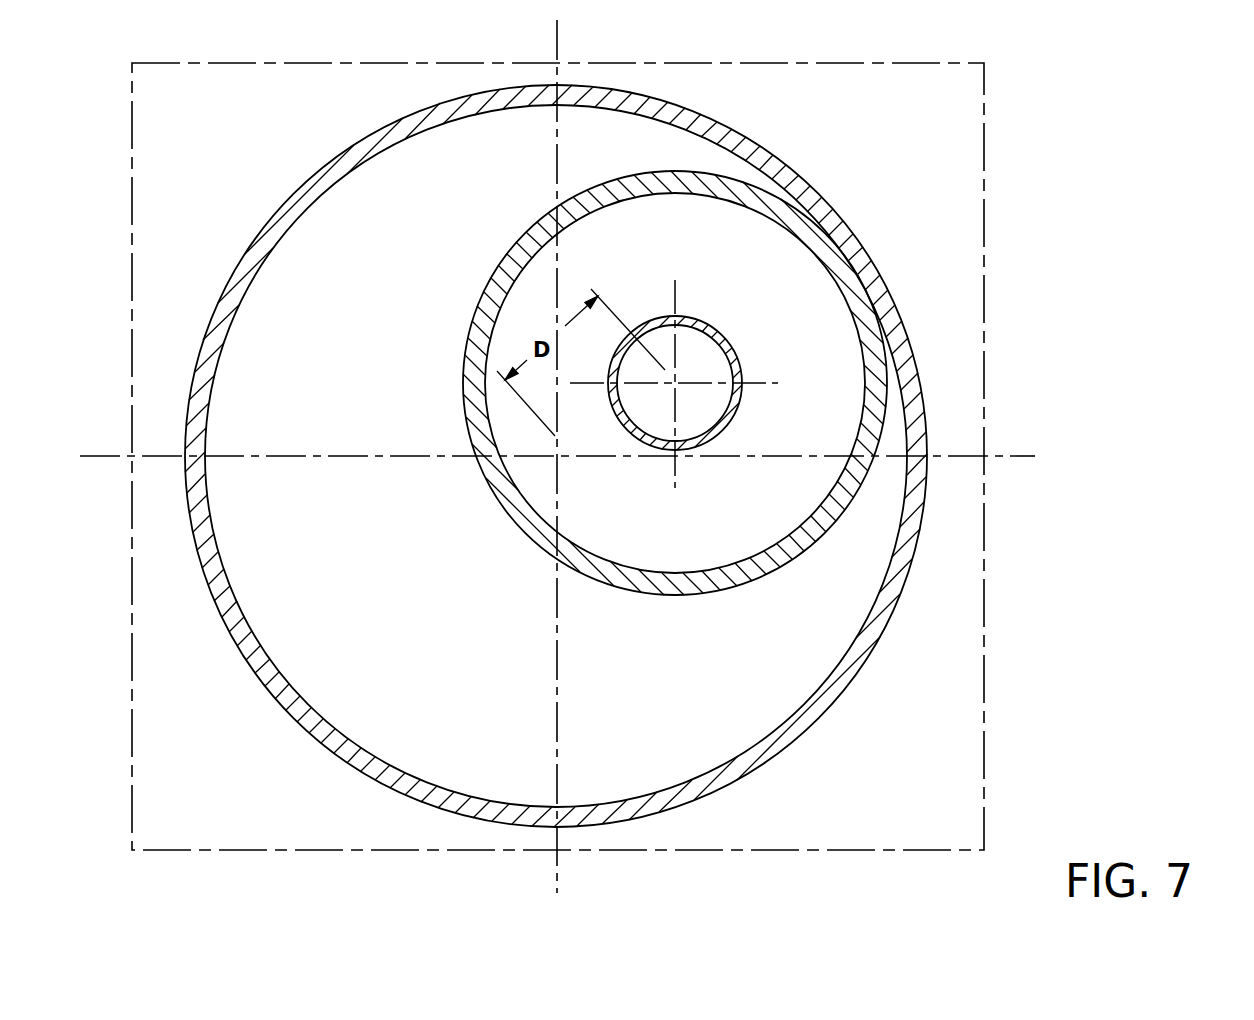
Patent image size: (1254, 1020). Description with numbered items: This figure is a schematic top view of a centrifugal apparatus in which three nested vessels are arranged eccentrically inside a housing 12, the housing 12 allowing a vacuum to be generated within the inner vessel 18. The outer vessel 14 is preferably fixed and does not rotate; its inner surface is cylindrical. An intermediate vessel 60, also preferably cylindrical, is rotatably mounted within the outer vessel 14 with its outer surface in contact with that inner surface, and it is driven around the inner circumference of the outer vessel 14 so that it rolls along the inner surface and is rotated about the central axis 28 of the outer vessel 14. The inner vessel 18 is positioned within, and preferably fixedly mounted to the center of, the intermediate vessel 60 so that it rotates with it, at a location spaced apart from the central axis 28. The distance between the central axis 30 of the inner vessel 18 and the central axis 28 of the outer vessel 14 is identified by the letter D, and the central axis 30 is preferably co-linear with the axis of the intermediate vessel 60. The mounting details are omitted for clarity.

The housing 12 is at (984, 377).
The outer vessel 14 is at (728, 123).
The inner vessel 18 is at (742, 403).
The central axis of the outer vessel 28 is at (556, 456).
The central axis of the inner vessel 30 is at (676, 386).
The intermediate vessel 60 is at (785, 160).